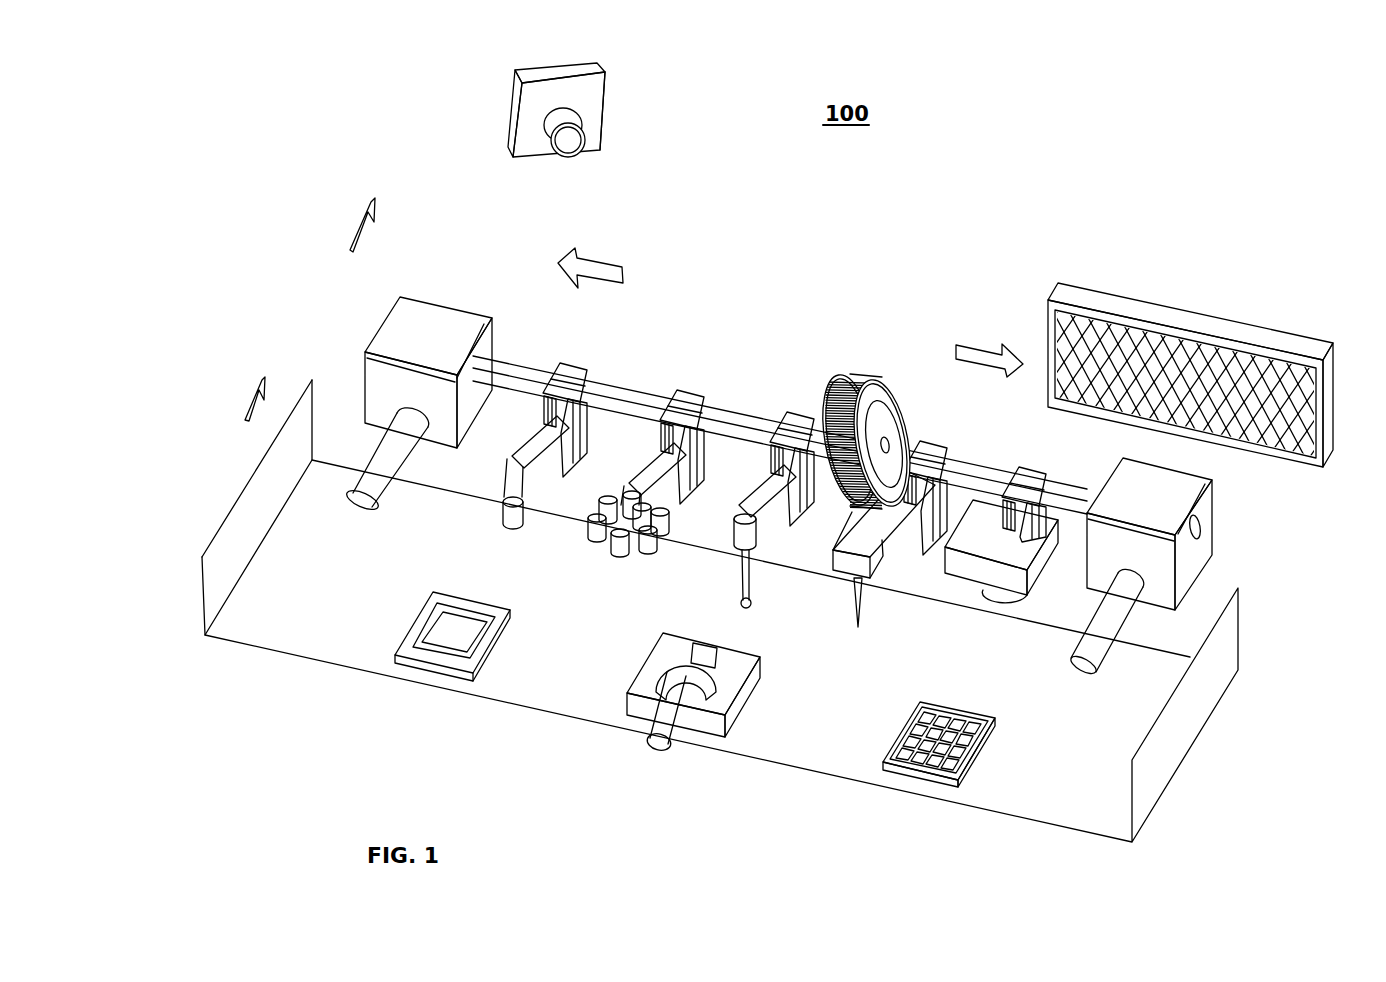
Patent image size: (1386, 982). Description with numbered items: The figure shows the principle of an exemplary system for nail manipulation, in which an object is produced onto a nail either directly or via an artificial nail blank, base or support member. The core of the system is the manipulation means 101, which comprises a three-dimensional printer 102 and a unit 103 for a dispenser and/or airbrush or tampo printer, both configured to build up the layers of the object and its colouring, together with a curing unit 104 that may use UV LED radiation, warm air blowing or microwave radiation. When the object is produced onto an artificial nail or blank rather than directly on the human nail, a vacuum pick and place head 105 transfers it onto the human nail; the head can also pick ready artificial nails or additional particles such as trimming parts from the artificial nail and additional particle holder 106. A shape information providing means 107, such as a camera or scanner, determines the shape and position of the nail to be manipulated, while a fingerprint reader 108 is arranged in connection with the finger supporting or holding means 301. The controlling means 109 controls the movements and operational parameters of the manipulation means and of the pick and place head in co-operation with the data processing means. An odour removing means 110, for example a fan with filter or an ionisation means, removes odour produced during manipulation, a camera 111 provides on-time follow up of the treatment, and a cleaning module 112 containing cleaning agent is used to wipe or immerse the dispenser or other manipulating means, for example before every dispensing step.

The manipulation means 101 is at (524, 310).
The 3D printer 102 is at (925, 447).
The unit for dispenser and/or airbrush or tampo printer 103 is at (690, 392).
The curing unit 104 is at (583, 367).
The pick and place head 105 is at (790, 415).
The artificial nail and additional particle holder 106 is at (975, 757).
The shape information providing means 107 is at (1035, 472).
The reader for reading fingerprints 108 is at (735, 660).
The controlling means 109 is at (1220, 566).
The odour removing means 110 is at (1190, 303).
The camera 111 is at (505, 116).
The cleaning module 112 is at (608, 100).
The finger supporting or holding means 301 is at (627, 661).